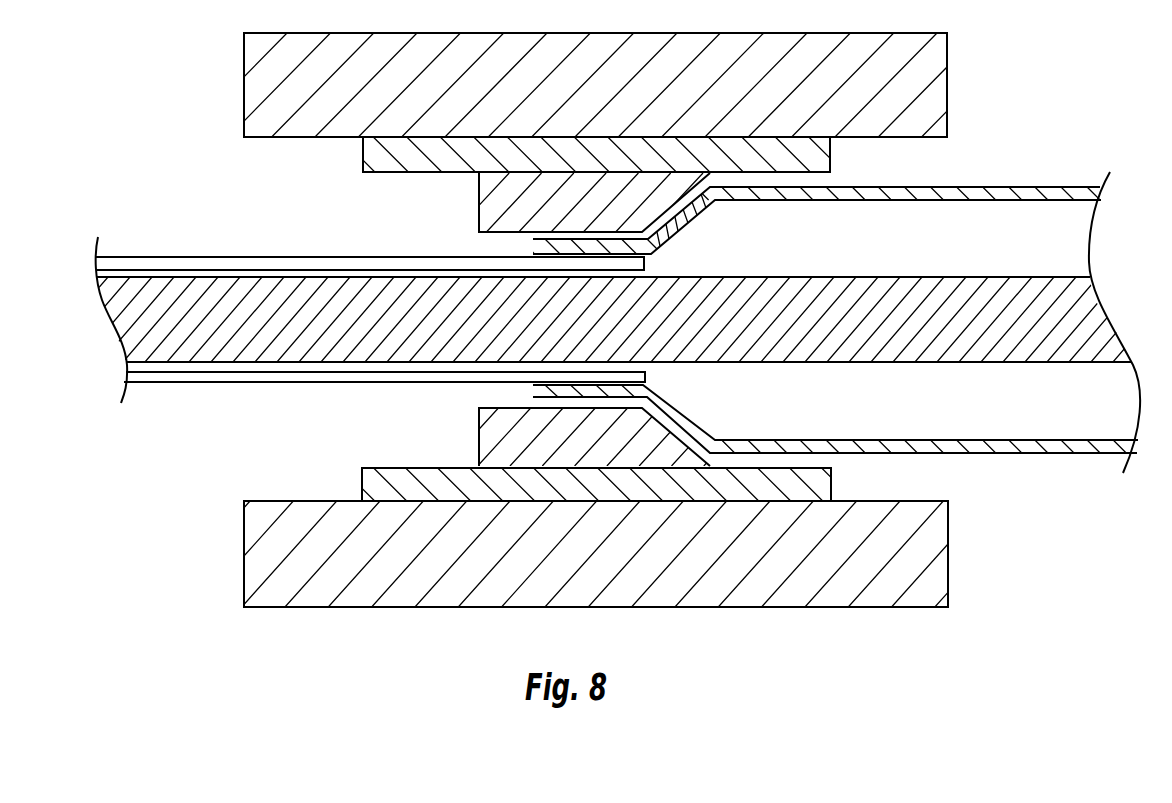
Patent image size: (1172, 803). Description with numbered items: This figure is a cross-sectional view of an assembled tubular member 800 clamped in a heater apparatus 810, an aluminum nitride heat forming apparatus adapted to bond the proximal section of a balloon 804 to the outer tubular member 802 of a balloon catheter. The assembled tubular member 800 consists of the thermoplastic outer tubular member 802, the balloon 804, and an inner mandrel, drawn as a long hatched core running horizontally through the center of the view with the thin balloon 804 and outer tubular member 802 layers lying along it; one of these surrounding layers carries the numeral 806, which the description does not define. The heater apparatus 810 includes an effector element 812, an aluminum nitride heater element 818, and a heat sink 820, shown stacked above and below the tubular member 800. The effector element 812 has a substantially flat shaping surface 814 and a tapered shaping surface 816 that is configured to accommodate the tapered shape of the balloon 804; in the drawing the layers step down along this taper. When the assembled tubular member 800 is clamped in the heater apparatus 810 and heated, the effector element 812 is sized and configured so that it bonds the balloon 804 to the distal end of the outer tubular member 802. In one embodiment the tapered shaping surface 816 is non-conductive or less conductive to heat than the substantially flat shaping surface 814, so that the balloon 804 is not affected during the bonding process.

The assembled tubular member 800 is at (305, 399).
The outer tubular member 802 is at (645, 267).
The balloon 804 is at (1027, 192).
The tubular member 806 is at (1042, 280).
The heater apparatus 810 is at (218, 28).
The effector element 812 is at (512, 448).
The substantially flat shaping surface 814 is at (510, 405).
The tapered shaping surface 816 is at (708, 453).
The aluminum nitride heater element 818 is at (823, 483).
The heat sink 820 is at (935, 537).